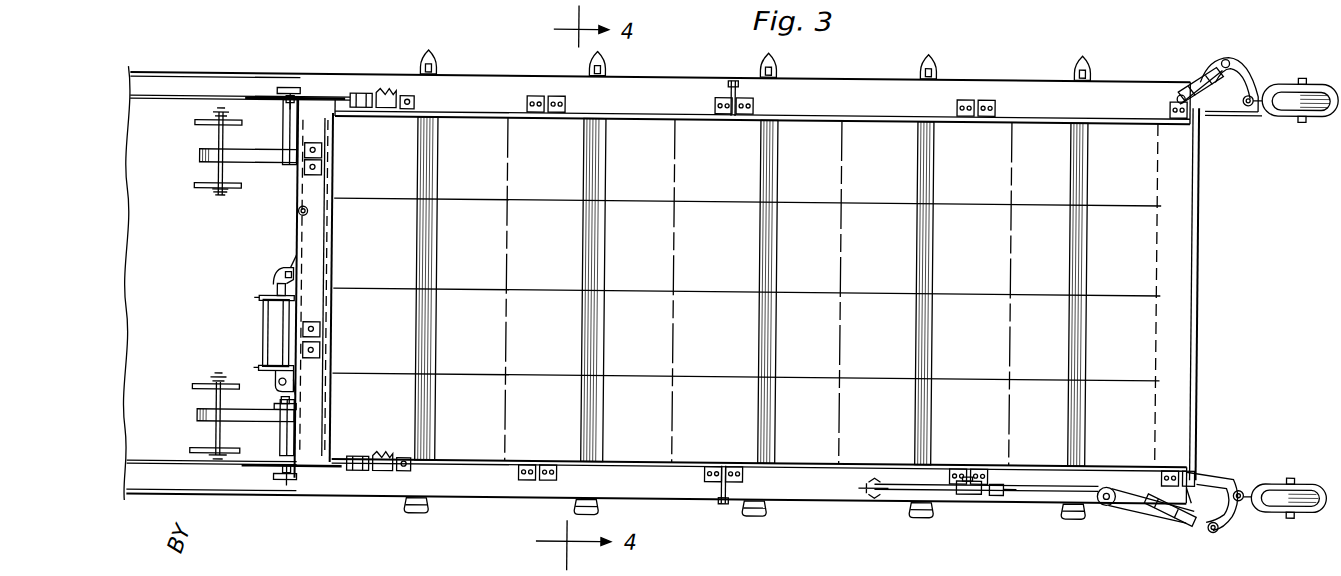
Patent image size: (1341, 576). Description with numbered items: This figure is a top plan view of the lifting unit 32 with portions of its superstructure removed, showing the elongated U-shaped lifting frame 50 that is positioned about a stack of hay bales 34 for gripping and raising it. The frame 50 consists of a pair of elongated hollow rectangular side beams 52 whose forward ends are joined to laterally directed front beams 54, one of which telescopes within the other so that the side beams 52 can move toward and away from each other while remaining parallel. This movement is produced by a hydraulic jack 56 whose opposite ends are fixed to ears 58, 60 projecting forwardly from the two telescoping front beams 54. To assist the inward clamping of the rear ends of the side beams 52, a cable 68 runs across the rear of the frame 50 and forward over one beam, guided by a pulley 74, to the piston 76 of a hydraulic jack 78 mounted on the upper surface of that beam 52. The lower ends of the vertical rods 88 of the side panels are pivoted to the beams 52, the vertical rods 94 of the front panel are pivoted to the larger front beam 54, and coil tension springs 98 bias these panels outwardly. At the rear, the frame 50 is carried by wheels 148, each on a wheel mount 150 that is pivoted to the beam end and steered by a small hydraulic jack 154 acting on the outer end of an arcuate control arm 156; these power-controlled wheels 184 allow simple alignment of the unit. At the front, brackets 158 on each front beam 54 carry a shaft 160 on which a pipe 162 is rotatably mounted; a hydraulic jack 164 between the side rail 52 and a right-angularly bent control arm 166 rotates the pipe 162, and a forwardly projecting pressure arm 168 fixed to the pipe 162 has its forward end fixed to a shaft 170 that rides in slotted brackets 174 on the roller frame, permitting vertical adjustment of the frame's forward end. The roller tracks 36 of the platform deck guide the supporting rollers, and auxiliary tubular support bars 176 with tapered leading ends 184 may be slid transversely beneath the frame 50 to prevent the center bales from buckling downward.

The lifting unit 32 is at (1206, 311).
The stack of hay bales 34 is at (1170, 241).
The roller tracks 36 is at (213, 73).
The lifting frame 50 is at (858, 505).
The side beams 52 is at (696, 70).
The front beams 54 is at (298, 228).
The hydraulic jack 56 is at (277, 333).
The ear 58 is at (277, 268).
The ear 60 is at (295, 379).
The cable 68 is at (1203, 365).
The pulley 74 is at (1112, 497).
The piston 76 is at (985, 487).
The hydraulic jack 78 is at (953, 487).
The vertical rods 88 is at (977, 109).
The vertical rods 94 is at (320, 337).
The coil tension springs 98 is at (312, 212).
The wheels 148 is at (1325, 92).
The wheel mount 150 is at (1258, 100).
The hydraulic jack 154 is at (1198, 67).
The arcuate control arm 156 is at (1237, 59).
The brackets 158 is at (297, 411).
The shaft 160 is at (291, 87).
The pipe 162 is at (290, 128).
The hydraulic jack 164 is at (386, 458).
The control arm 166 is at (313, 100).
The pressure arm 168 is at (255, 158).
The shaft 170 is at (213, 134).
The brackets 174 is at (205, 119).
The tubular support bars 176 is at (918, 64).
The leading end 184 is at (590, 53).